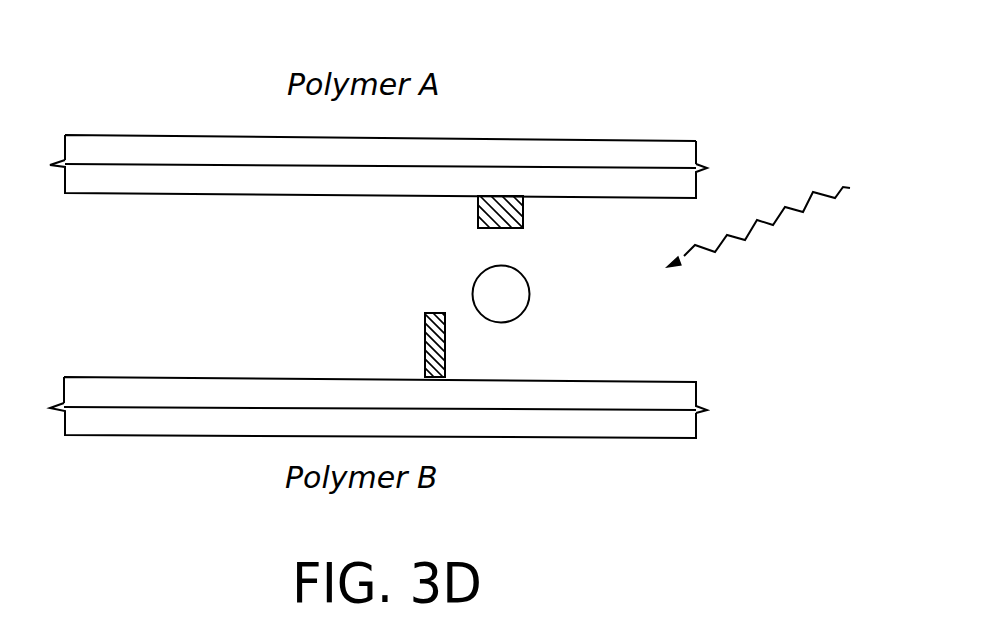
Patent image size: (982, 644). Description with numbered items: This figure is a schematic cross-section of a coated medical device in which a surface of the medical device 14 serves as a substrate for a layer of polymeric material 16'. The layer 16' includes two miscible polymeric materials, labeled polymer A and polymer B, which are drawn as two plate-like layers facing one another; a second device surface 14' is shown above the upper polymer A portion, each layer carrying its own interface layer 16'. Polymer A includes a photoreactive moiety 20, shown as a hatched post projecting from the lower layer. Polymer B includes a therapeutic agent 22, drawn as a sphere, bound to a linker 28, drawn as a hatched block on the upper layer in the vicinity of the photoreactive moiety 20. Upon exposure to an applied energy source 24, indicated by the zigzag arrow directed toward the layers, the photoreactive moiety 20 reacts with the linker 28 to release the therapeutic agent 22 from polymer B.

The first polymer layer (Polymer A) 14' is at (434, 142).
The layer of polymeric material 16' is at (426, 286).
The medical device 14 is at (423, 425).
The linker 28 is at (524, 206).
The therapeutic agent 22 is at (528, 295).
The photoreactive moiety 20 is at (425, 328).
The applied energy source 24 is at (773, 225).